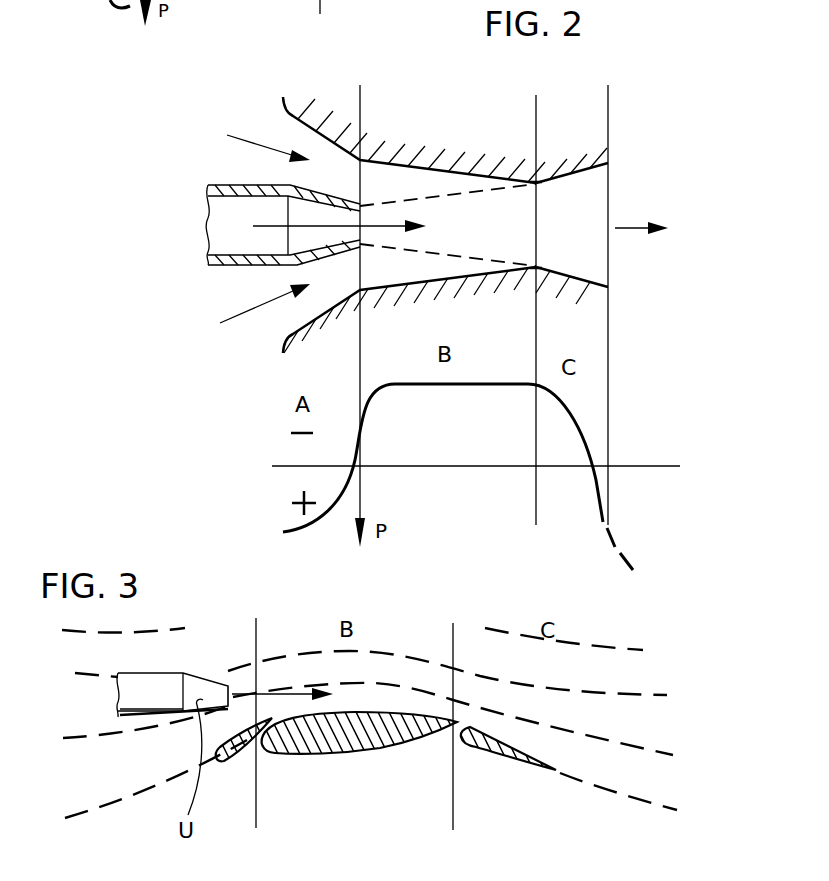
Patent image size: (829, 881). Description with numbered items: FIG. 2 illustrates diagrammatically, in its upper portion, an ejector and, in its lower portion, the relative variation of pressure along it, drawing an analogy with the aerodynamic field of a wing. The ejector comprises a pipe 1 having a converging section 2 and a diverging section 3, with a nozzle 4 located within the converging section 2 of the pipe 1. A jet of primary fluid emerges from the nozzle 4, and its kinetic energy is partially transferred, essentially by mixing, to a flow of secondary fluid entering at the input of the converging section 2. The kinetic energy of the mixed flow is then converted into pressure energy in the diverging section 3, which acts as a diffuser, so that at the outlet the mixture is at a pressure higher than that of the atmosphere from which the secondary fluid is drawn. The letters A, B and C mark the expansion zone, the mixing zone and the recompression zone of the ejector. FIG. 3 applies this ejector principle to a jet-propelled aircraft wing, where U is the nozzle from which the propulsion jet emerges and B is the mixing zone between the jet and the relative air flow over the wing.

The pipe 1 is at (585, 181).
The converging section 2 is at (432, 164).
The diverging section 3 is at (562, 165).
The nozzle 4 is at (238, 199).